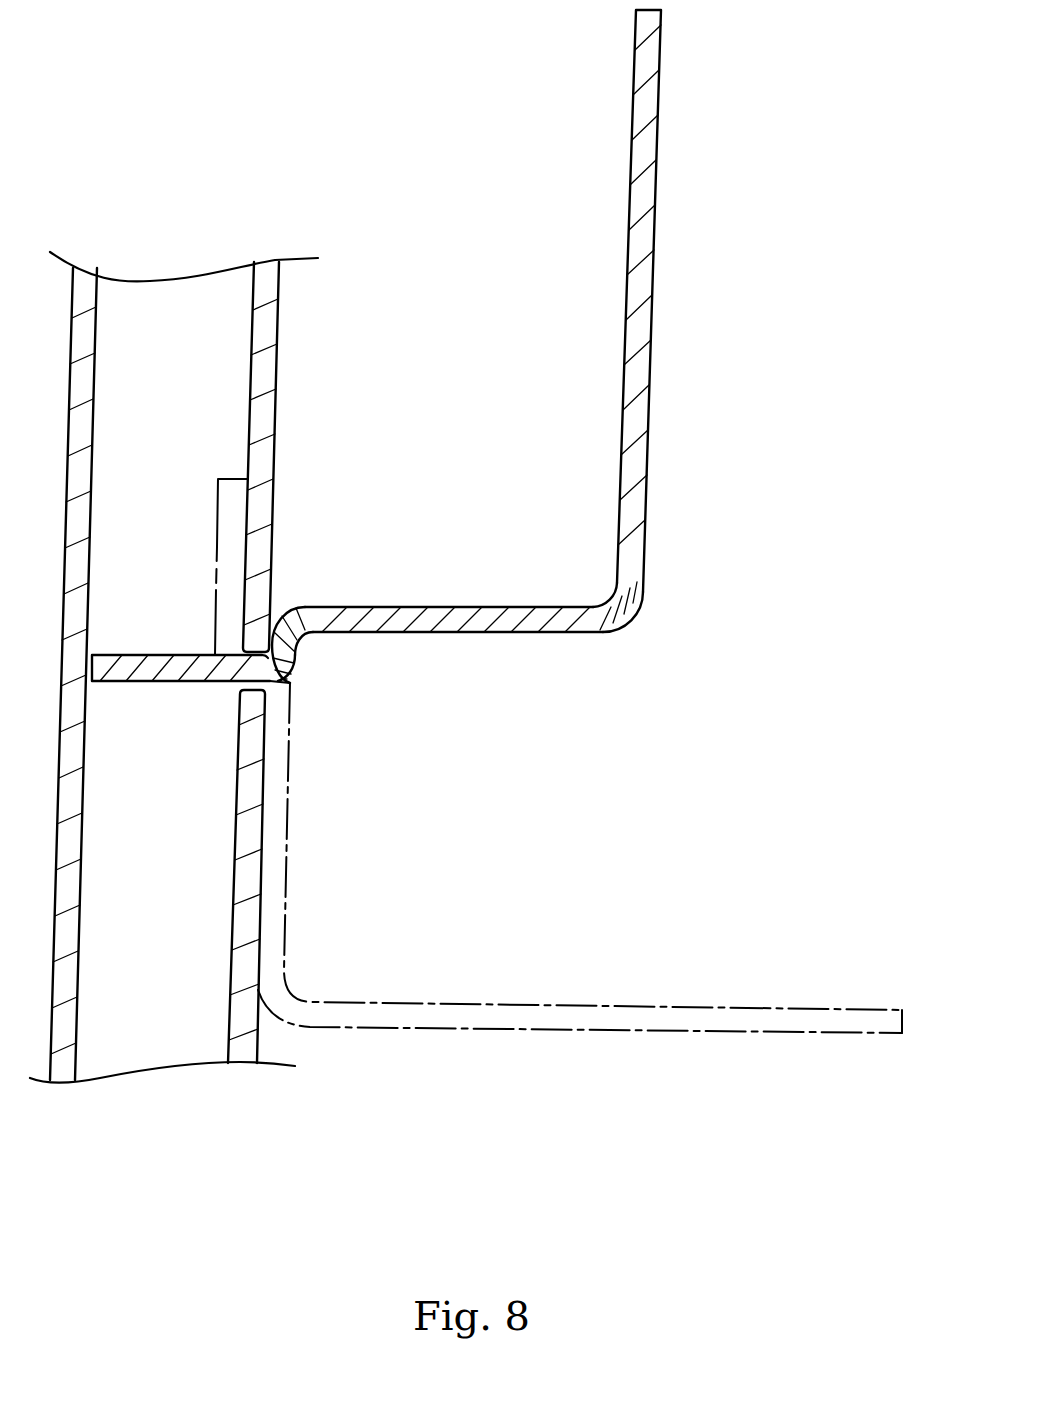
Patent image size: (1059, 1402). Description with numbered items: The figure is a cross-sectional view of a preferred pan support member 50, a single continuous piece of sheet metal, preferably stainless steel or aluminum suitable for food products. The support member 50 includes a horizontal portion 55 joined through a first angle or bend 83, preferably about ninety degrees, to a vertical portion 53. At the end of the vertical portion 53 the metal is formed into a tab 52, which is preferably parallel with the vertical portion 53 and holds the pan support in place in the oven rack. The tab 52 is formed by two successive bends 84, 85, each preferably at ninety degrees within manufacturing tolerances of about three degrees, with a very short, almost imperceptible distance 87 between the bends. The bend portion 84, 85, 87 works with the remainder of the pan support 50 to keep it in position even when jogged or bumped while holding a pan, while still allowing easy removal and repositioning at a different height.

The pan support member 50 is at (580, 521).
The tab 52 is at (138, 688).
The vertical portion 53 is at (513, 607).
The horizontal portion 55 is at (657, 230).
The first angle or bend 83 is at (630, 617).
The bend 84 is at (287, 607).
The bend 85 is at (290, 683).
The distance between the bends 87 is at (288, 647).